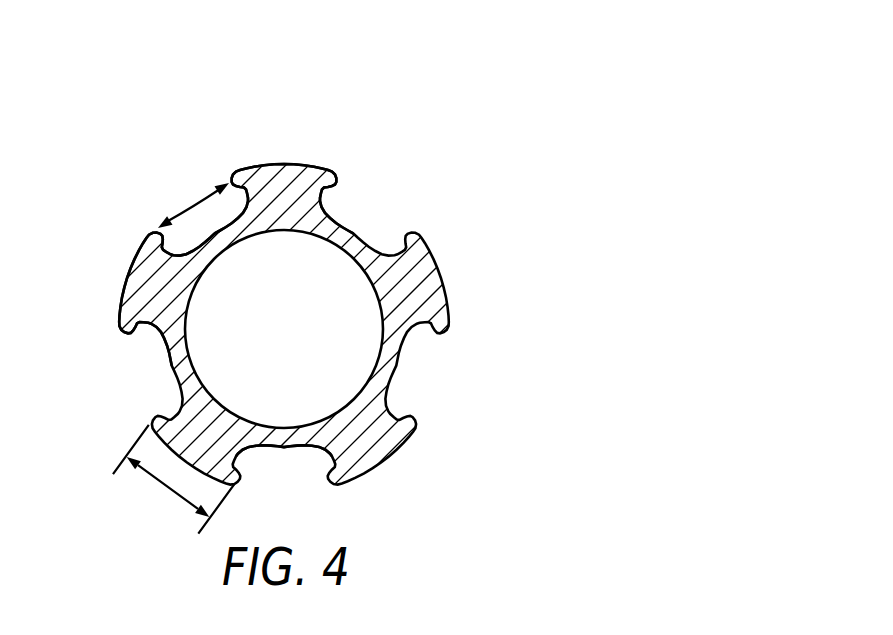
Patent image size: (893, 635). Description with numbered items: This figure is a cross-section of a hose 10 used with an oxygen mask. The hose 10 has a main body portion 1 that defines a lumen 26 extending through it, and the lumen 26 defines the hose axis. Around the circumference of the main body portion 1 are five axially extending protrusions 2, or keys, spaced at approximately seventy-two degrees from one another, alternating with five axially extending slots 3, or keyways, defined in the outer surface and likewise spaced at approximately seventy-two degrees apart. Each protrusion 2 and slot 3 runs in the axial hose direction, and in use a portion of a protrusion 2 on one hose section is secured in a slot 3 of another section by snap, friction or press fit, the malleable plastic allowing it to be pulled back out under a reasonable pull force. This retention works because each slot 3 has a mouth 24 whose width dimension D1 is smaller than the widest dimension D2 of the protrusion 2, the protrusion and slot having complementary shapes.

The hose 10 is at (519, 127).
The main body portion 1 is at (418, 287).
The axially extending protrusion 2 is at (283, 164).
The axially extending slot 3 is at (281, 455).
The mouth 24 is at (125, 335).
The lumen 26 is at (347, 353).
The width dimension of the mouth D1 is at (197, 207).
The widest dimension of the protrusion D2 is at (167, 488).